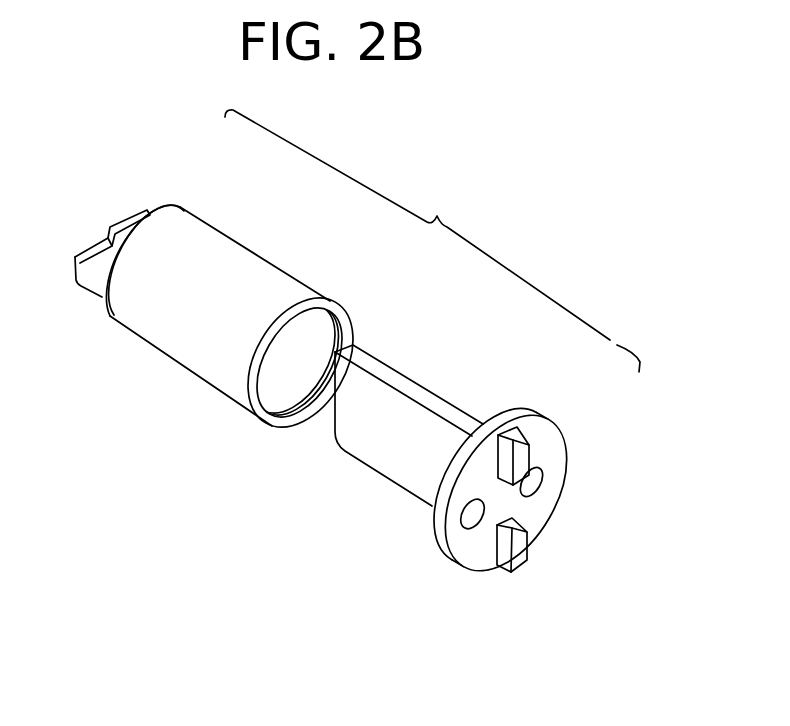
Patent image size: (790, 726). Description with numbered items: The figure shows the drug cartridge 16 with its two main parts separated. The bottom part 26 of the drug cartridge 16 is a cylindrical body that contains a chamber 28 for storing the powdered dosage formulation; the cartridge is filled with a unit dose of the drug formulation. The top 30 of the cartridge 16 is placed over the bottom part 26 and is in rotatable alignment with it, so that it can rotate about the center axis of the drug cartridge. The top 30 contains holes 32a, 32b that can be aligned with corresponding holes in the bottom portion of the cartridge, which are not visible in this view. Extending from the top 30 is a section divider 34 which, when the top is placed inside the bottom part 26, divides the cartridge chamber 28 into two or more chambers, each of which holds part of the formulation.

The drug cartridge 16 is at (432, 241).
The bottom part 26 is at (176, 392).
The chamber 28 is at (317, 329).
The top 30 is at (400, 515).
The hole 32a is at (545, 472).
The hole 32b is at (460, 524).
The section divider 34 is at (388, 443).